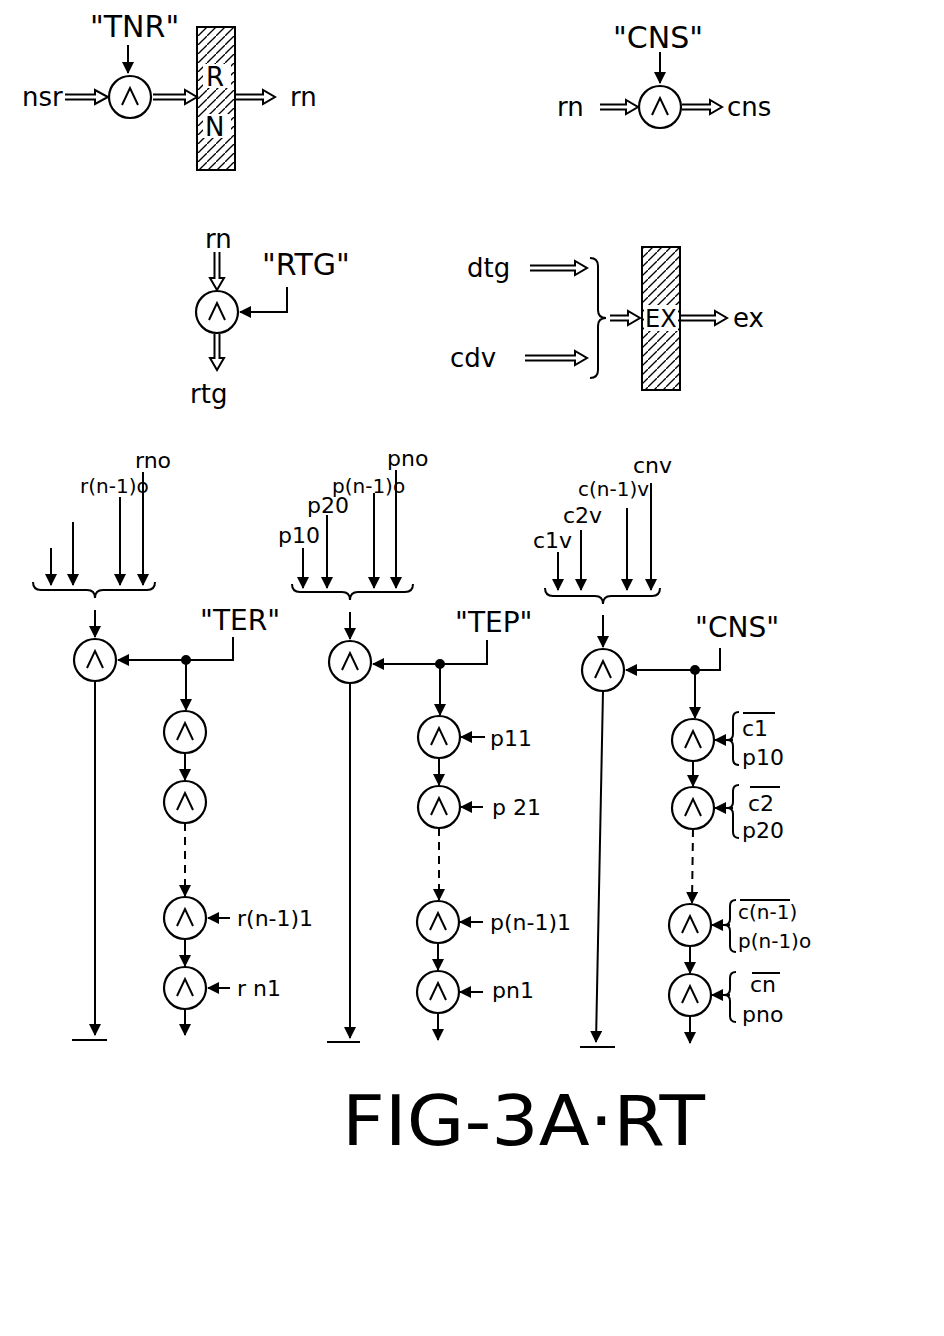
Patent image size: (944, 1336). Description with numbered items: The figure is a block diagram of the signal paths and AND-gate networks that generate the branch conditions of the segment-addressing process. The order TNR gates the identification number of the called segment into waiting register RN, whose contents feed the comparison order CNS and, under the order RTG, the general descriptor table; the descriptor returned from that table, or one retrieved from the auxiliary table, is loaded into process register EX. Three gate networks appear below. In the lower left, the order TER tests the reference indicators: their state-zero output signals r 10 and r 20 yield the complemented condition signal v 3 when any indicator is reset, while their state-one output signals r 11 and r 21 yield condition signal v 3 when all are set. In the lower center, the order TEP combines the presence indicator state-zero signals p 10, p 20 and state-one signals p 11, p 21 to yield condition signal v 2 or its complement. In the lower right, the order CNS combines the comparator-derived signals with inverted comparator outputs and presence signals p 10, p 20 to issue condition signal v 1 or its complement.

The r10 input signal line 10 is at (40, 554).
The r20 input signal line 20 is at (80, 541).
The r11 AND gate 11 is at (208, 733).
The r21 AND gate 21 is at (208, 802).
The v1 output 1 is at (643, 885).
The v2 output 2 is at (386, 879).
The v3 output 3 is at (134, 877).